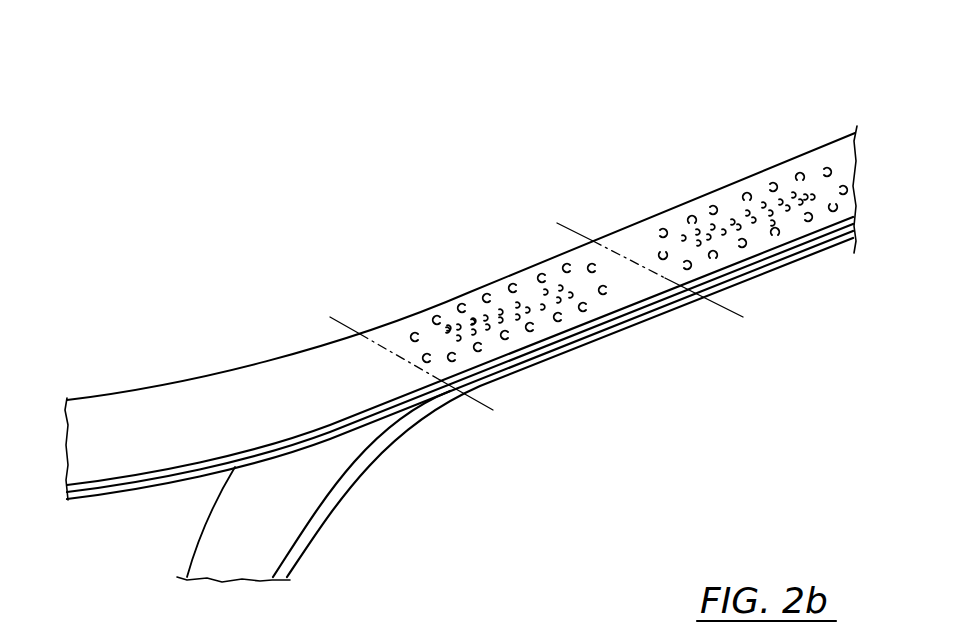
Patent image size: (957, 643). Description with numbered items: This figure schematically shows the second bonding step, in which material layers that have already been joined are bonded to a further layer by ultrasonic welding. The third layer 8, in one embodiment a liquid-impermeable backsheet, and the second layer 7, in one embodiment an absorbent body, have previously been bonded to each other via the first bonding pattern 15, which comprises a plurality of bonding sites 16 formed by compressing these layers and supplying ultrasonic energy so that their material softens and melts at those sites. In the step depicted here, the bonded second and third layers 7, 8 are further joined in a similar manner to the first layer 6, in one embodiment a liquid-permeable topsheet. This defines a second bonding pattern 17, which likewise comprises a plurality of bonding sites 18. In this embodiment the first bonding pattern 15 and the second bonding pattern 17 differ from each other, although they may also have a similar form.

The first layer 6 is at (297, 493).
The second layer 7 is at (136, 488).
The third layer 8 is at (112, 416).
The first bonding pattern 15 is at (550, 265).
The bonding sites 16 is at (604, 293).
The second bonding pattern 17 is at (521, 337).
The bonding sites 18 is at (483, 315).